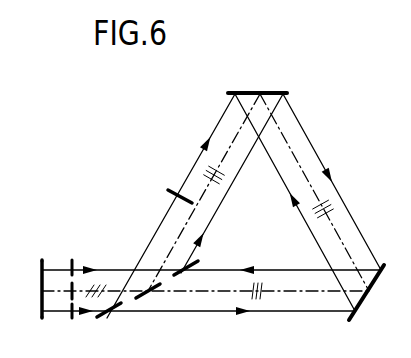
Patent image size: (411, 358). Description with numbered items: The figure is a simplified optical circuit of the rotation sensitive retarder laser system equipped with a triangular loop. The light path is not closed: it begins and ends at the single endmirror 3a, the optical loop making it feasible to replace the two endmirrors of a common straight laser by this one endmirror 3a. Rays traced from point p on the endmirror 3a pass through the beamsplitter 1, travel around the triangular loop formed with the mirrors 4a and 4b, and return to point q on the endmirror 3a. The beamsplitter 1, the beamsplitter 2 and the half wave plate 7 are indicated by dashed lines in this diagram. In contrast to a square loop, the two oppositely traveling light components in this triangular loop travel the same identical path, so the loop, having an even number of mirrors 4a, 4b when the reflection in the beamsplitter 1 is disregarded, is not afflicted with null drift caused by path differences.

The beamsplitter 1 is at (110, 316).
The beamsplitter 2 is at (81, 306).
The endmirror 3a is at (27, 289).
The mirror 4a is at (373, 297).
The mirror 4b is at (274, 99).
The half wave plate 7 is at (172, 187).
The point p is at (45, 261).
The point q is at (45, 318).